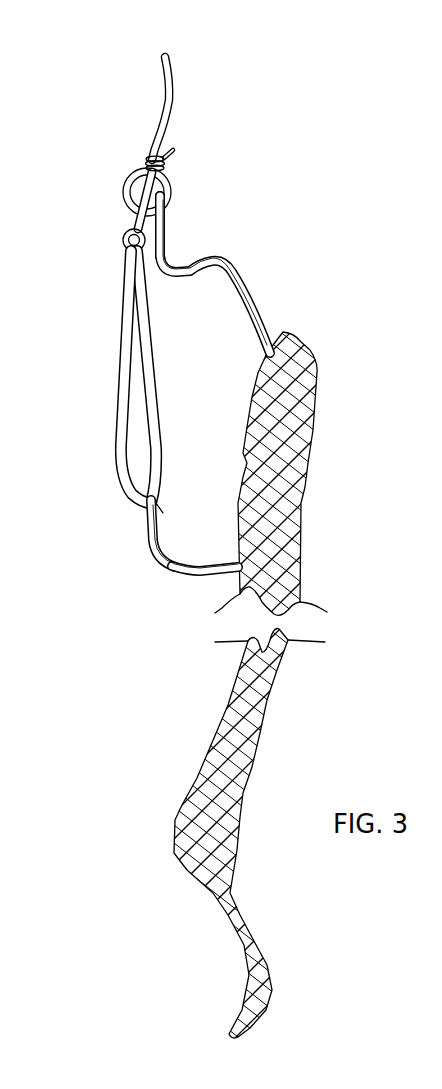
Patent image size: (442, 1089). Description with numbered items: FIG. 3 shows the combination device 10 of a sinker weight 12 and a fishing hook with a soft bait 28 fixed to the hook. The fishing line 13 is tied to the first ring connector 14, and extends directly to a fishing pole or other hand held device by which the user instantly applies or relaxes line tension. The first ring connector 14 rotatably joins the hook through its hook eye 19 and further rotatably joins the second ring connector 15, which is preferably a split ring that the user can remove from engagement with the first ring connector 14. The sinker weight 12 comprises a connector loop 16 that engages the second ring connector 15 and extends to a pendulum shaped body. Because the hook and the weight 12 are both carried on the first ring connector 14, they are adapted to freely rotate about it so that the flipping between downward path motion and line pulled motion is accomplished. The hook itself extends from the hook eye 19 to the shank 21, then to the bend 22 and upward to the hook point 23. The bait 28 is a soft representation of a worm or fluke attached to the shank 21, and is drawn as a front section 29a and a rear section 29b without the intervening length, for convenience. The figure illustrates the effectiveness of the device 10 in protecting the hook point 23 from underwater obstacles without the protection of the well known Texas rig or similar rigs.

The combination device 10 is at (187, 363).
The sinker weight 12 is at (114, 369).
The fishing line 13 is at (179, 95).
The first ring connector 14 is at (170, 172).
The second ring connector 15 is at (128, 218).
The connector loop 16 is at (111, 247).
The hook eye 19 is at (175, 228).
The shank 21 is at (264, 303).
The bend 22 is at (193, 579).
The hook point 23 is at (142, 520).
The soft bait 28 is at (290, 654).
The front section 29a is at (285, 484).
The rear section 29b is at (230, 836).